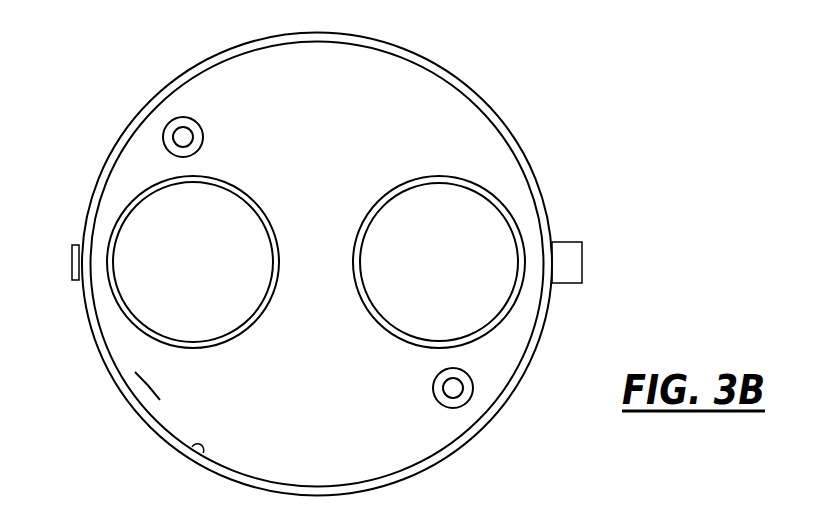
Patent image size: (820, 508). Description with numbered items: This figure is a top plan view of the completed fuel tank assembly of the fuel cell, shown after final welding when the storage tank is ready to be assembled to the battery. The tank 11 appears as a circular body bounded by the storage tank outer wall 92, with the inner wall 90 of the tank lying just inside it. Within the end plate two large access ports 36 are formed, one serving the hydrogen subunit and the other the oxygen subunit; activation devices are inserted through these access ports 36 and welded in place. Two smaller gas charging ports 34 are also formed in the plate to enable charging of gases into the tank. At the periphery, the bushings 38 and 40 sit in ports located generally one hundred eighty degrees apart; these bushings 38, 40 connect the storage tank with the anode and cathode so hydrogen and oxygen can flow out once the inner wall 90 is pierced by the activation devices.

The housing / cover plate 11 is at (455, 85).
The gas charging port 34 is at (177, 129).
The access port 36 is at (135, 227).
The bushing 38 is at (72, 262).
The bushing 40 is at (582, 258).
The inner wall 90 is at (196, 455).
The storage tank outer wall 92 is at (143, 410).